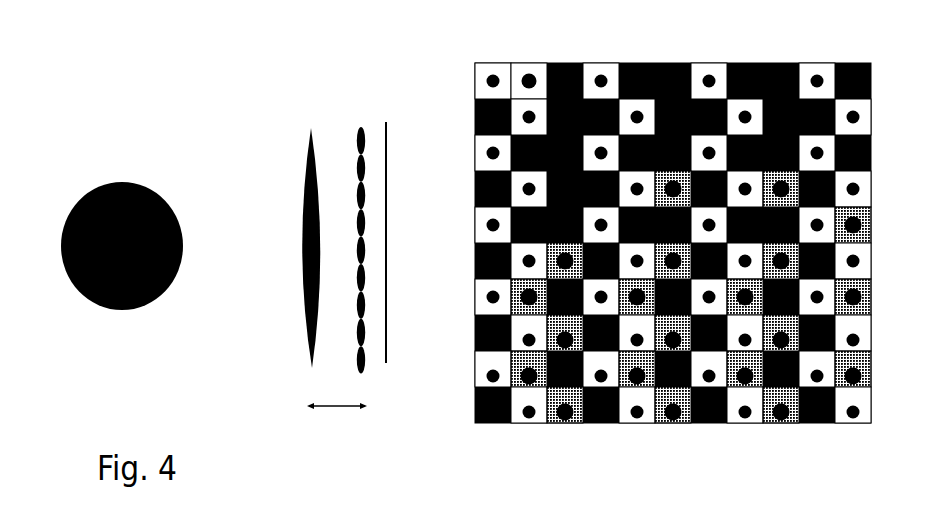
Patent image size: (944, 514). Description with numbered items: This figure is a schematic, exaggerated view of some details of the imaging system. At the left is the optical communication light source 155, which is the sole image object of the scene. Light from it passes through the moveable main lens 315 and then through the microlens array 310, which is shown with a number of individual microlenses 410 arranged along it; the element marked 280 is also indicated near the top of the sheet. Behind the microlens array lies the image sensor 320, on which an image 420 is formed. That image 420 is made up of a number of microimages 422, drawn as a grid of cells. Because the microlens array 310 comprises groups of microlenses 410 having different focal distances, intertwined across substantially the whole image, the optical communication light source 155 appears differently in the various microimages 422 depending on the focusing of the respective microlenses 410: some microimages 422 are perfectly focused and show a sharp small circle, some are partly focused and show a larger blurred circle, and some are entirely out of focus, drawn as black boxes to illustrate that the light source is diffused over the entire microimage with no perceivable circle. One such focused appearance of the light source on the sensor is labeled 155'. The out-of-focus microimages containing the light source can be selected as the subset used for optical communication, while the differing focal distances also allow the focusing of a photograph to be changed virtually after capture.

The optical element 280 is at (162, 4).
The optical communication light source 155 is at (122, 206).
The main lens 315 is at (283, 218).
The microlens array 310 is at (343, 125).
The microlens 410 is at (358, 137).
The image sensor 320 is at (405, 282).
The image 420 is at (582, 46).
The microimage 422 is at (693, 49).
The imaged light spot 155' is at (800, 49).